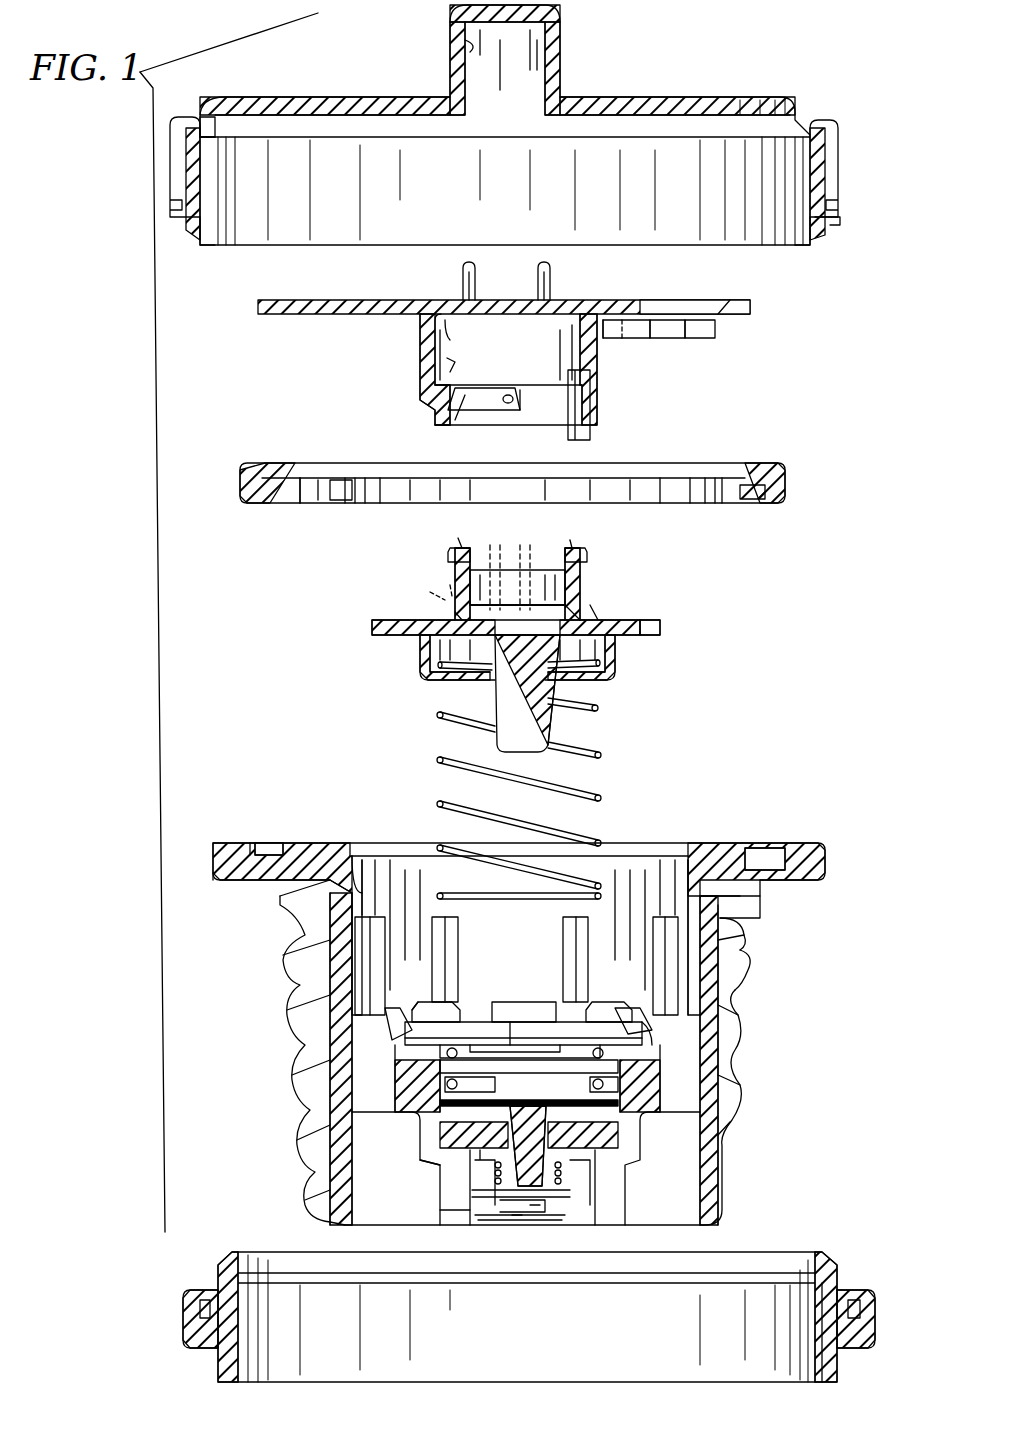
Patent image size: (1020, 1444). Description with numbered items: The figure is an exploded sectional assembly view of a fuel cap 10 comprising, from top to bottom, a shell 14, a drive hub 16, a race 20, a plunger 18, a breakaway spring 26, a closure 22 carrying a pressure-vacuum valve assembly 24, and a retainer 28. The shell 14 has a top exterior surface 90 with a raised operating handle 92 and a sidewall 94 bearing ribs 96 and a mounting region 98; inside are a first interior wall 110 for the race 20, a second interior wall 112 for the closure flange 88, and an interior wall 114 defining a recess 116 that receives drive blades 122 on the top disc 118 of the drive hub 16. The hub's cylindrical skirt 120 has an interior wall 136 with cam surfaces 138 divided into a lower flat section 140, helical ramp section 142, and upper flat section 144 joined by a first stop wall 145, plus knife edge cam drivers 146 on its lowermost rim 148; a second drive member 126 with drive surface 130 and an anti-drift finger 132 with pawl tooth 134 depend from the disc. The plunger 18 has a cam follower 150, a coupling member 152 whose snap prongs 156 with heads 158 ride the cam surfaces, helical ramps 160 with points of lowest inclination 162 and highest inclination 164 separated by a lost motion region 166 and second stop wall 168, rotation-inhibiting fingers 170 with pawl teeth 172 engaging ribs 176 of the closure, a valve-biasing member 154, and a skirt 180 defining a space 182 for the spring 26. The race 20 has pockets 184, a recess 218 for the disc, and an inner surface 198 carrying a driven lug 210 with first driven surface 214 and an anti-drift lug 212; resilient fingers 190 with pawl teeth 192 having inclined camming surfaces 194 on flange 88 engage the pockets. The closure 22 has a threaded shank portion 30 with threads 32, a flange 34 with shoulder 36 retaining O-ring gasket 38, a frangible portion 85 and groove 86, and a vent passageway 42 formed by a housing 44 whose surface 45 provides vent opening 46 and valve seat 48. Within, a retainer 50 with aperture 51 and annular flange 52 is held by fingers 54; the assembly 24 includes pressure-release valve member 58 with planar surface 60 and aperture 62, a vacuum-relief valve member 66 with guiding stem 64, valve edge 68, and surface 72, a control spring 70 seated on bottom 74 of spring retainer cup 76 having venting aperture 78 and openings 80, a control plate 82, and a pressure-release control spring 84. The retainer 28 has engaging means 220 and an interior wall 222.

The fuel cap 10 is at (772, 48).
The shell 14 is at (790, 107).
The drive hub 16 is at (790, 350).
The plunger 18 is at (712, 652).
The race 20 is at (794, 472).
The closure 22 is at (795, 1025).
The pressure-vacuum valve assembly 24 is at (598, 972).
The breakaway spring 26 is at (598, 755).
The retainer 28 is at (852, 1252).
The shank portion 30 is at (722, 1192).
The threads 32 is at (720, 1068).
The flange 34 is at (765, 900).
The shoulder 36 is at (752, 930).
The O-ring gasket 38 is at (760, 965).
The vent passageway 42 is at (472, 985).
The pressure-vacuum valve housing 44 is at (405, 1150).
The axially outwardly-facing surface 45 is at (465, 1215).
The vent opening 46 is at (470, 1130).
The valve seat 48 is at (612, 1160).
The retainer 50 is at (448, 1040).
The central circular aperture 51 is at (512, 1040).
The annular flange 52 is at (360, 1050).
The fingers 54 is at (600, 1010).
The pressure-release valve member 58 is at (632, 1130).
The planar surface 60 is at (622, 1152).
The central circular aperture 62 is at (560, 1095).
The guiding stem portion 64 is at (560, 1055).
The vacuum-relief valve member 66 is at (540, 1212).
The valve edge 68 is at (548, 1135).
The vacuum-relief control spring 70 is at (480, 1195).
The axially inwardly-facing surface 72 is at (480, 1176).
The bottom 74 is at (598, 1195).
The spring retainer cup 76 is at (520, 1225).
The venting aperture 78 is at (545, 1220).
The radially disposed openings 80 is at (495, 1215).
The control plate 82 is at (550, 1110).
The pressure-release control spring 84 is at (435, 1068).
The frangible portion 85 is at (355, 885).
The groove 86 is at (318, 888).
The flange 88 is at (215, 880).
The top exterior surface 90 is at (635, 100).
The operating handle 92 is at (560, 50).
The sidewall 94 is at (180, 130).
The ribs 96 is at (835, 175).
The mounting region 98 is at (848, 228).
The first interior wall 110 is at (250, 110).
The second interior wall 112 is at (215, 222).
The interior wall 114 is at (468, 38).
The recess 116 is at (500, 95).
The top disc 118 is at (355, 300).
The cylindrical skirt 120 is at (418, 378).
The drive blades 122 is at (468, 282).
The second drive member 126 is at (632, 340).
The drive surface 130 is at (600, 345).
The anti-drift finger 132 is at (670, 345).
The pawl tooth 134 is at (703, 328).
The interior wall 136 is at (447, 325).
The cam surfaces 138 is at (492, 386).
The lower flat section 140 is at (505, 412).
The helical ramp section 142 is at (468, 398).
The upper flat section 144 is at (448, 362).
The first stop wall 145 is at (518, 402).
The knife edge cam drivers 146 is at (575, 445).
The lowermost rim 148 is at (445, 425).
The cam follower 150 is at (415, 618).
The coupling member 152 is at (592, 578).
The valve-biasing member 154 is at (555, 718).
The snap prongs 156 is at (455, 540).
The head 158 is at (456, 556).
The helical ramps 160 is at (540, 570).
The point of lowest inclination 162 is at (582, 620).
The point of highest inclination 164 is at (495, 560).
The lost motion region 166 is at (447, 600).
The second stop wall 168 is at (455, 613).
The rotation-inhibiting fingers 170 is at (652, 620).
The pawl tooth 172 is at (670, 630).
The ribs 176 is at (440, 945).
The skirt 180 is at (432, 676).
The space 182 is at (580, 680).
The pockets 184 is at (755, 500).
The resilient fingers 190 is at (768, 860).
The pawl teeth 192 is at (280, 838).
The inclined camming surface 194 is at (262, 842).
The radially inwardly-facing surface 198 is at (587, 495).
The driven lug 210 is at (358, 505).
The anti-drift lug 212 is at (330, 455).
The first driven surface 214 is at (320, 505).
The recess 218 is at (748, 466).
The engaging means 220 is at (872, 1302).
The interior wall 222 is at (830, 1345).